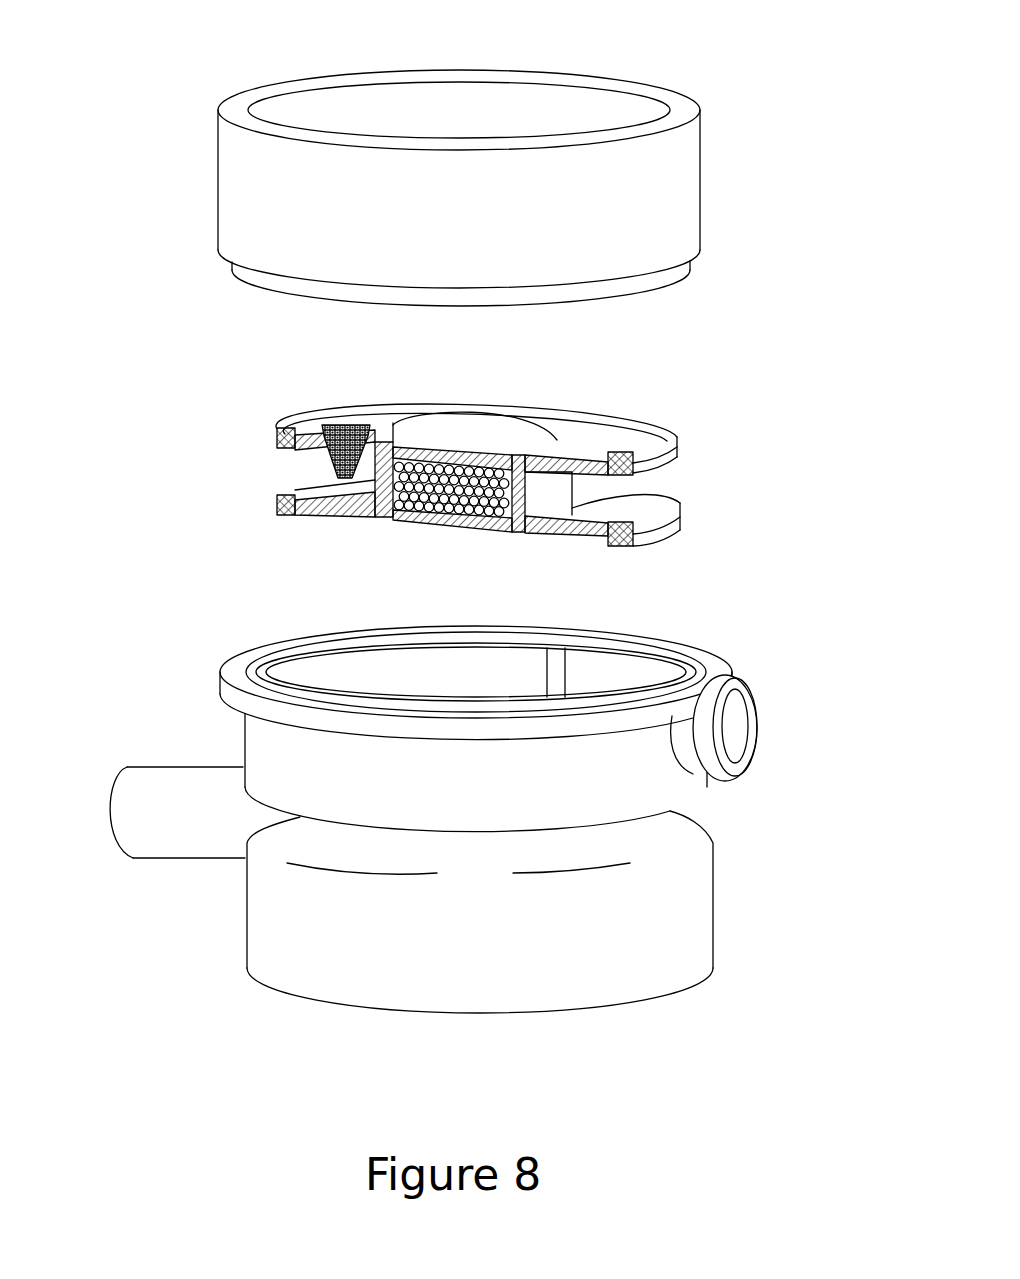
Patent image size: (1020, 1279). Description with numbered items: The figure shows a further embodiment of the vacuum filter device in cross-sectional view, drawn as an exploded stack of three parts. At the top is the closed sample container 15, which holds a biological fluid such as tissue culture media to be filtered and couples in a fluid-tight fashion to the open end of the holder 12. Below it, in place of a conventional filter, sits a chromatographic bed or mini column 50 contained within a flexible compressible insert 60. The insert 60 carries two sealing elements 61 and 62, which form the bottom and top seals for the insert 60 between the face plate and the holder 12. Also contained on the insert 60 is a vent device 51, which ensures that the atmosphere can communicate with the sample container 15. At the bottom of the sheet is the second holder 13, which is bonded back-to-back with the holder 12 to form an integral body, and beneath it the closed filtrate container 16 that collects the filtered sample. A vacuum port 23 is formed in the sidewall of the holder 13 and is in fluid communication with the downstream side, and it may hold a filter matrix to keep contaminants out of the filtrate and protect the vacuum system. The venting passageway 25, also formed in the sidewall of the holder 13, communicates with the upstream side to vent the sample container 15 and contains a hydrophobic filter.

The holder 12 is at (682, 270).
The holder 13 is at (285, 757).
The sample container 15 is at (268, 200).
The filtrate container 16 is at (635, 908).
The vacuum port 23 is at (735, 770).
The venting passageway 25 is at (735, 733).
The chromatographic bed or mini column 50 is at (455, 460).
The vent device 51 is at (338, 425).
The flexible compressible insert 60 is at (608, 505).
The sealing element 61 is at (665, 533).
The sealing element 62 is at (290, 432).